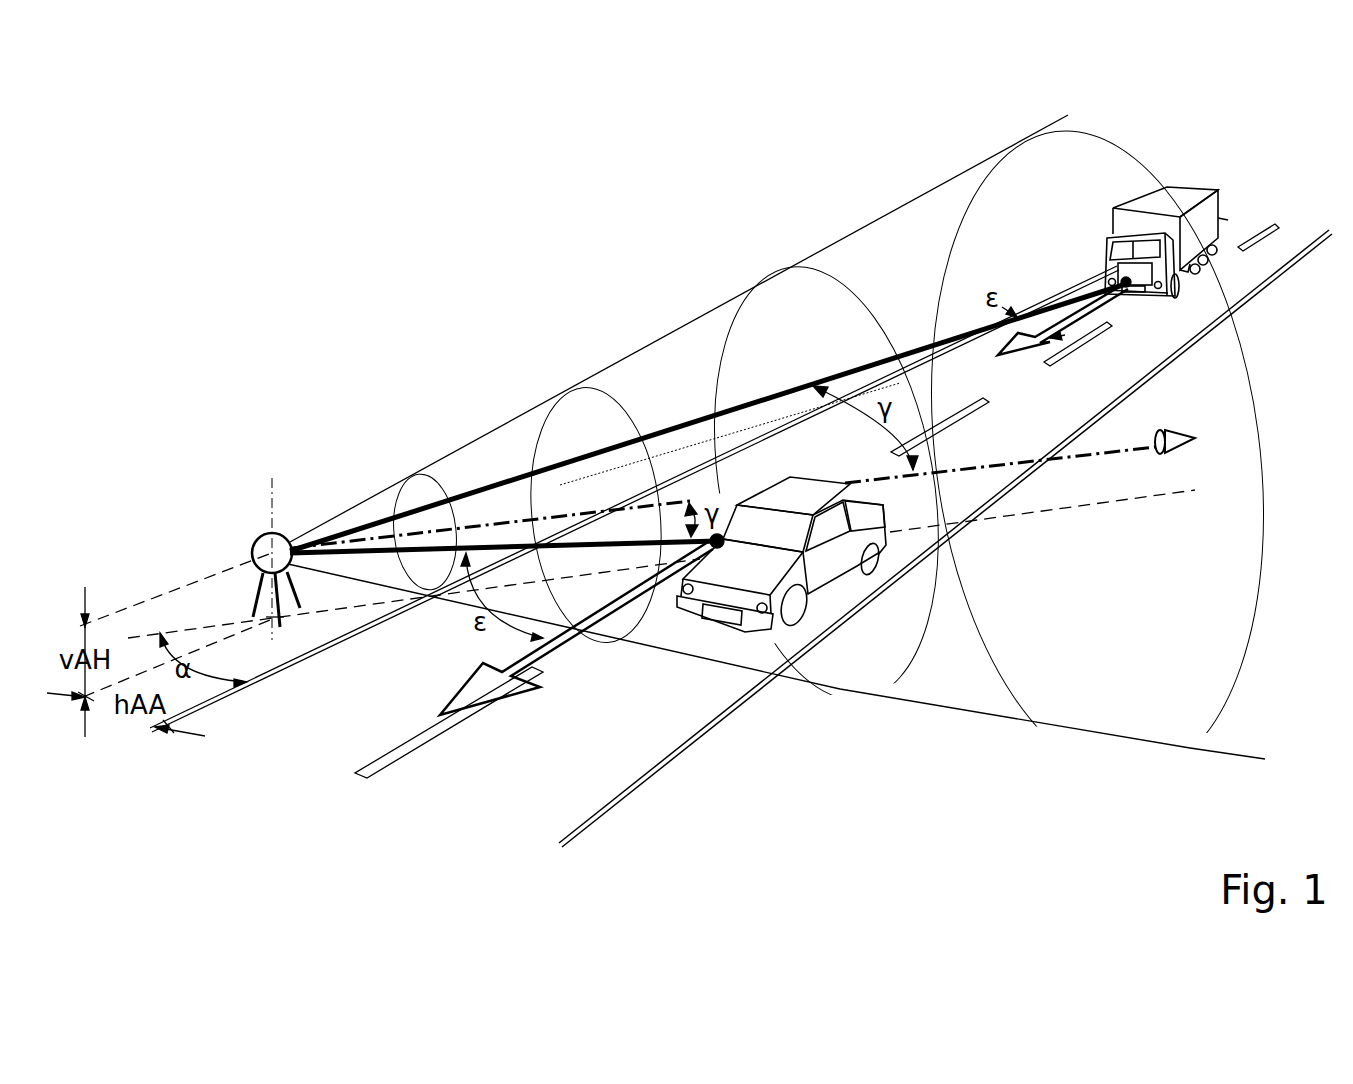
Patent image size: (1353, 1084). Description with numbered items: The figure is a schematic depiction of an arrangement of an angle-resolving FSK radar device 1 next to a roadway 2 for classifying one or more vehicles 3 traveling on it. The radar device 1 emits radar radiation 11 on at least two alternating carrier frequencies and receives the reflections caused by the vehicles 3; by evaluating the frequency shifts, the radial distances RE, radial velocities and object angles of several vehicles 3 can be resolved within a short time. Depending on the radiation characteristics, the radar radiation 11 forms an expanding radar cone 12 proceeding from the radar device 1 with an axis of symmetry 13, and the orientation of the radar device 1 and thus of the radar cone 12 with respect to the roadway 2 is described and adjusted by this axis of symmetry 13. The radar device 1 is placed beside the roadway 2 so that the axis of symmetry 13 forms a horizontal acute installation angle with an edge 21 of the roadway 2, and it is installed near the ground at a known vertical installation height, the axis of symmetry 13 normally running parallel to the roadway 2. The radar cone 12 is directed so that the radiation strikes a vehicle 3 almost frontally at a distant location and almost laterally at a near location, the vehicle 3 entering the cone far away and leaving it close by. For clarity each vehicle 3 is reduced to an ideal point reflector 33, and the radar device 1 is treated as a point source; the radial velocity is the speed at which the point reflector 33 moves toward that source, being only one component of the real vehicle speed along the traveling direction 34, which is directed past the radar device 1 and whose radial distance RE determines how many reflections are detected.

The radar device 1 is at (262, 532).
The roadway 2 is at (1093, 387).
The vehicle 3 is at (847, 560).
The radar radiation 11 is at (434, 482).
The radar cone 12 is at (866, 224).
The axis of symmetry 13 is at (520, 525).
The edge of the roadway 21 is at (317, 660).
The point reflector 33 is at (723, 553).
The traveling direction 34 is at (540, 575).
The radial distance RE is at (390, 635).